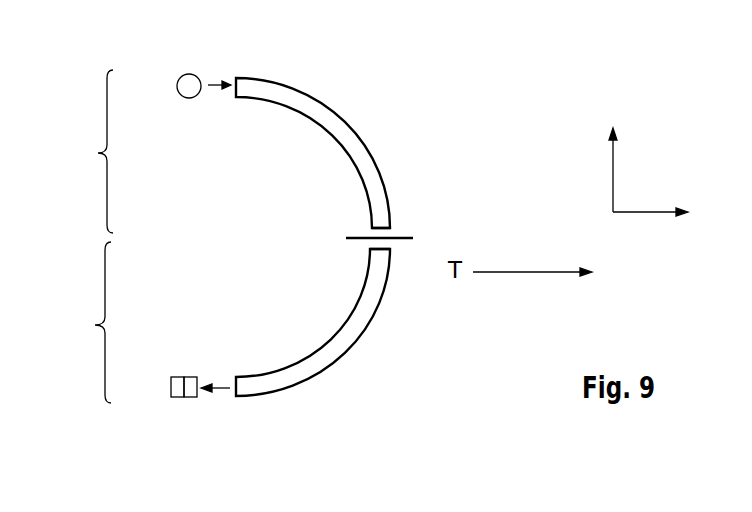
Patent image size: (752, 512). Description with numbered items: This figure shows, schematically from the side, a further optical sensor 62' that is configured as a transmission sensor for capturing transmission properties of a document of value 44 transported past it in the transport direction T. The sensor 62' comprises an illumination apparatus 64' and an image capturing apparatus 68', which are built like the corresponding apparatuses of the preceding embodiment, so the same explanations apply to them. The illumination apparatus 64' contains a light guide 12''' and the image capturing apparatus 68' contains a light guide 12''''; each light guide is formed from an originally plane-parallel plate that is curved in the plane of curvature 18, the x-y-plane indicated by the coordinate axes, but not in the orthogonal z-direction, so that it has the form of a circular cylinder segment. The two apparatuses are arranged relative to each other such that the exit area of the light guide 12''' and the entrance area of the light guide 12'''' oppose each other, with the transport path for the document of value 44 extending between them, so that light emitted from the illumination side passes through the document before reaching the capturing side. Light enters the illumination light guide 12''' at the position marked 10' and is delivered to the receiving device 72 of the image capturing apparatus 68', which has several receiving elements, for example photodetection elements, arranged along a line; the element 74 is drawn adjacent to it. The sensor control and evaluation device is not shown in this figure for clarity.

The medium / dental workpiece entry 10' is at (204, 116).
The light guide 12''' is at (313, 138).
The light guide 12'''' is at (319, 325).
The plane of curvature 18 is at (661, 124).
The document of value 44 is at (353, 235).
The optical sensor 62' is at (482, 152).
The illumination apparatus 64' is at (79, 151).
The image capturing apparatus 68' is at (80, 322).
The receiving device 72 is at (168, 369).
The second processing station 74 is at (190, 398).